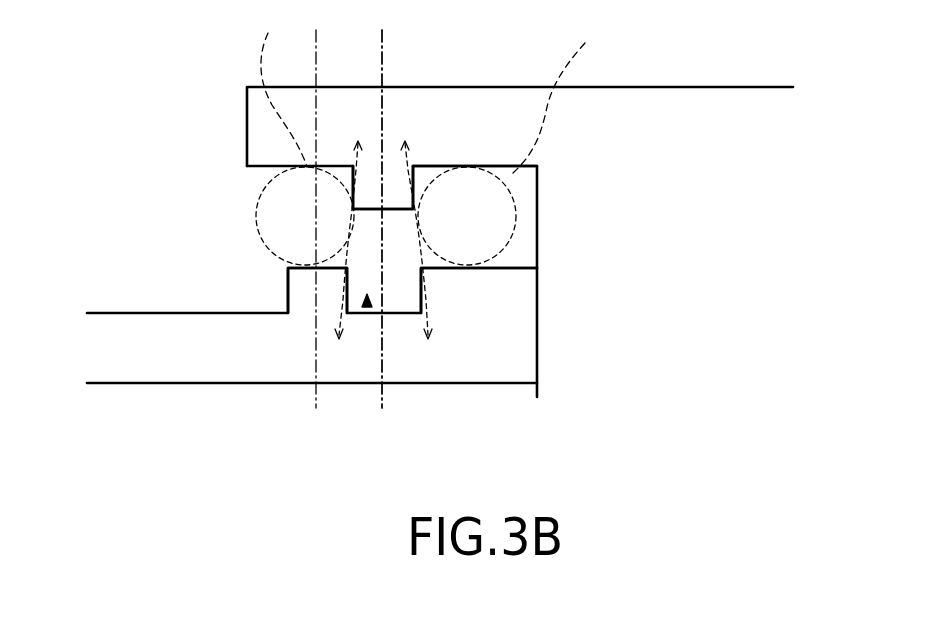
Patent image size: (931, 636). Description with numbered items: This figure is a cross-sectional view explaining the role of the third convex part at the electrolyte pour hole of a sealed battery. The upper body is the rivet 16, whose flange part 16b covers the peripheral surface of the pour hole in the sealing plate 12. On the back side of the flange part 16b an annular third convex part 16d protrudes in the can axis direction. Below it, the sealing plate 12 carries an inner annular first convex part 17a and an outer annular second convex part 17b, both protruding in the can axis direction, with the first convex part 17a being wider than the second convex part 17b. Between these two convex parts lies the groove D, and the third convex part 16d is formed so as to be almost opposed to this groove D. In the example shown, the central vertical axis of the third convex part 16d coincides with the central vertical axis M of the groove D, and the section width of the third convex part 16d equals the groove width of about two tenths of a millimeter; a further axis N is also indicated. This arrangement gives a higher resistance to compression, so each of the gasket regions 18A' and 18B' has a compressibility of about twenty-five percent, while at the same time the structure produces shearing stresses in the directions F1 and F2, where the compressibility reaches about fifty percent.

The sealing plate 12 is at (201, 365).
The rivet 16 is at (666, 348).
The flange part 16b is at (458, 137).
The third convex part 16d is at (367, 190).
The first convex part 17a is at (458, 293).
The second convex part 17b is at (318, 298).
The region 18A' is at (296, 172).
The region 18B' is at (512, 169).
The direction F1 is at (347, 257).
The direction F2 is at (427, 253).
The axis N is at (317, 204).
The central vertical axis M is at (380, 204).
The groove D is at (367, 307).